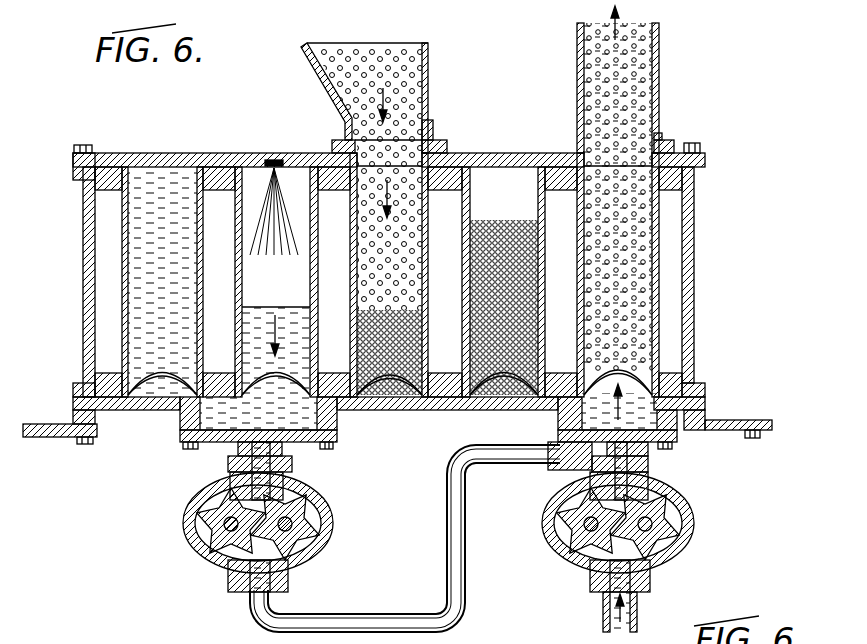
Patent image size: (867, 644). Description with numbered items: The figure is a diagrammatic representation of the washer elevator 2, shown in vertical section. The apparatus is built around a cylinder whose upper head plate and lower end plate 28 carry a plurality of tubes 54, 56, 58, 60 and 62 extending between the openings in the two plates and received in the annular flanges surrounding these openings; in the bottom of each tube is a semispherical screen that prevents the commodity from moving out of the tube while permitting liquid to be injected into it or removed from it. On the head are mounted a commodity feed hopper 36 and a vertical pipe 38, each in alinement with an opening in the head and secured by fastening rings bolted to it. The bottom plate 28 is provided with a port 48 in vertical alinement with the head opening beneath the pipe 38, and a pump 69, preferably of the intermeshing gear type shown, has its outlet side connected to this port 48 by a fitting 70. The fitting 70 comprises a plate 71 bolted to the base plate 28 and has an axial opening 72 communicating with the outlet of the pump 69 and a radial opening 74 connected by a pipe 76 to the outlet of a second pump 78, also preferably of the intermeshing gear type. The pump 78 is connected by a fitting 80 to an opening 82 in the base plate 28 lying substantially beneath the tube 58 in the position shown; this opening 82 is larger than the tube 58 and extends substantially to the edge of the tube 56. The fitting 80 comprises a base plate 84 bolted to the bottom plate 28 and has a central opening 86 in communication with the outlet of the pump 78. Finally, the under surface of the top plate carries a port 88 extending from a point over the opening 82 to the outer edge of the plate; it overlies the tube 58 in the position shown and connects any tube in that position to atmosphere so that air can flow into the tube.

The washer elevator 2 is at (702, 118).
The lower end plate 28 is at (415, 410).
The commodity feed hopper 36 is at (407, 90).
The vertical pipe 38 is at (657, 80).
The port 48 is at (704, 398).
The tube 54 is at (655, 277).
The tube 56 is at (125, 318).
The tube 58 is at (240, 288).
The tube 60 is at (352, 295).
The tube 62 is at (465, 313).
The pump 69 is at (694, 519).
The fitting 70 is at (640, 455).
The plate 71 is at (552, 440).
The axial opening 72 is at (646, 470).
The radial opening 74 is at (580, 478).
The pipe 76 is at (455, 529).
The pump 78 is at (187, 546).
The fitting 80 is at (300, 455).
The opening 82 is at (328, 422).
The base plate 84 is at (305, 438).
The central opening 86 is at (240, 450).
The port 88 is at (275, 158).